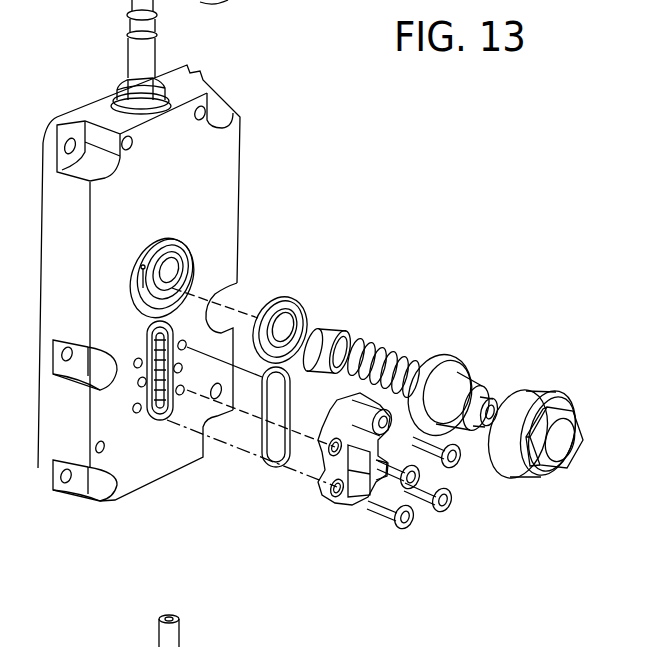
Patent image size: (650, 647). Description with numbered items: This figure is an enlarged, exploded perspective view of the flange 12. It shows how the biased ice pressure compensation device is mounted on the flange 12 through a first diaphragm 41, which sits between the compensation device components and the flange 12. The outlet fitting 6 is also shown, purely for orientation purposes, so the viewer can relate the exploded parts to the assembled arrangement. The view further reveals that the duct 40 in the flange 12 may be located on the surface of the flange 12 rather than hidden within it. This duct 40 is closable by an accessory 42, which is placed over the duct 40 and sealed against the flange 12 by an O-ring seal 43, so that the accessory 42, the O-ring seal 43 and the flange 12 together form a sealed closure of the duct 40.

The flange 12 is at (207, 188).
The duct 40 is at (176, 406).
The first diaphragm 41 is at (258, 298).
The accessory 42 is at (353, 503).
The O-ring seal 43 is at (265, 467).
The outlet fitting 6 is at (173, 638).